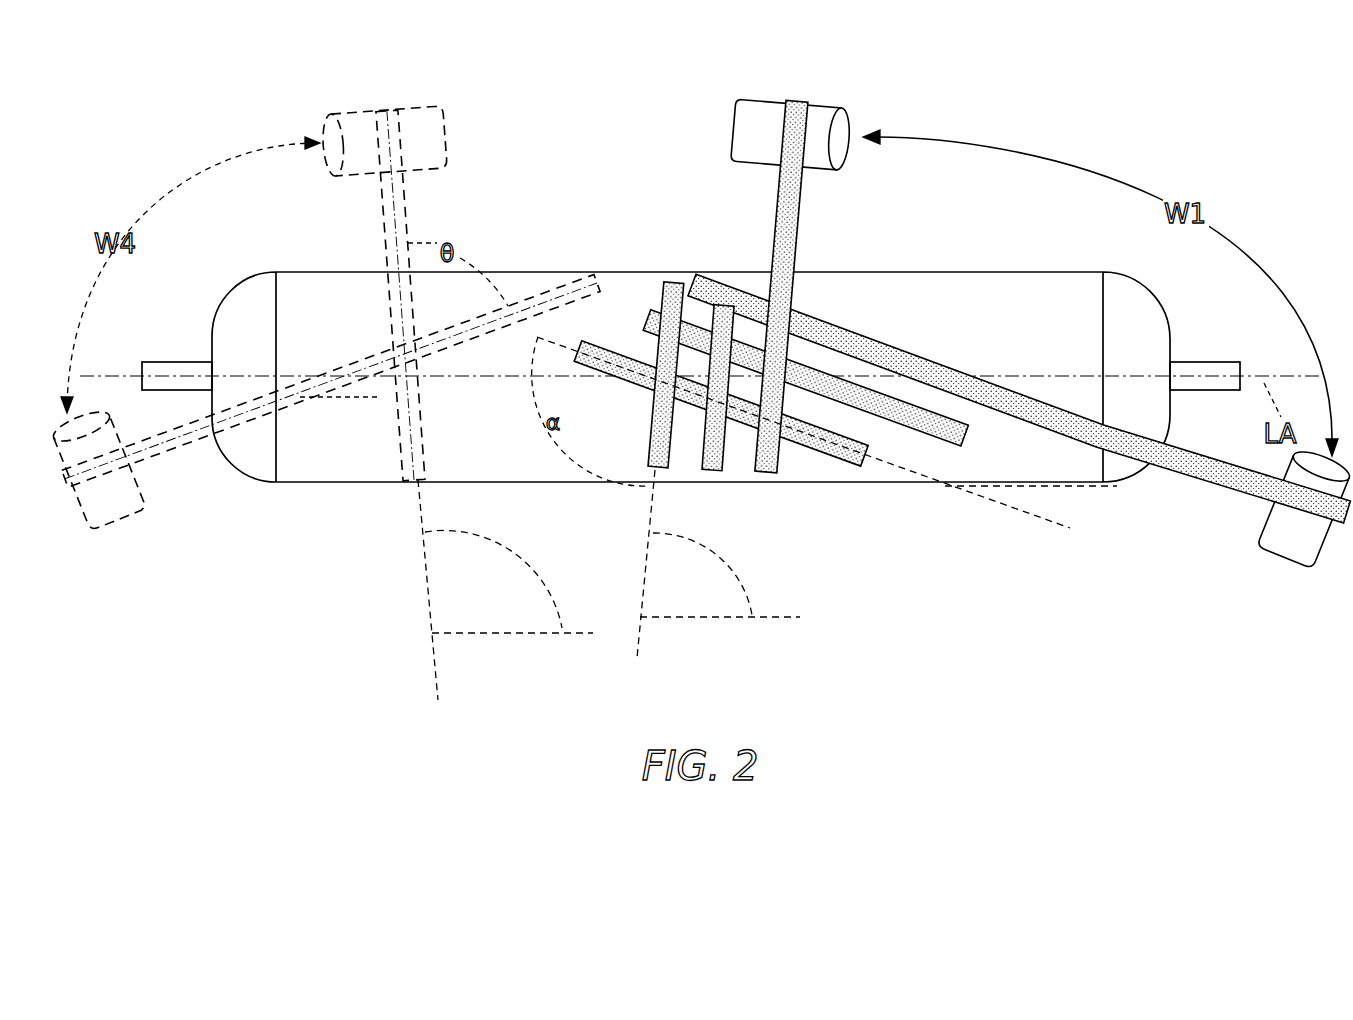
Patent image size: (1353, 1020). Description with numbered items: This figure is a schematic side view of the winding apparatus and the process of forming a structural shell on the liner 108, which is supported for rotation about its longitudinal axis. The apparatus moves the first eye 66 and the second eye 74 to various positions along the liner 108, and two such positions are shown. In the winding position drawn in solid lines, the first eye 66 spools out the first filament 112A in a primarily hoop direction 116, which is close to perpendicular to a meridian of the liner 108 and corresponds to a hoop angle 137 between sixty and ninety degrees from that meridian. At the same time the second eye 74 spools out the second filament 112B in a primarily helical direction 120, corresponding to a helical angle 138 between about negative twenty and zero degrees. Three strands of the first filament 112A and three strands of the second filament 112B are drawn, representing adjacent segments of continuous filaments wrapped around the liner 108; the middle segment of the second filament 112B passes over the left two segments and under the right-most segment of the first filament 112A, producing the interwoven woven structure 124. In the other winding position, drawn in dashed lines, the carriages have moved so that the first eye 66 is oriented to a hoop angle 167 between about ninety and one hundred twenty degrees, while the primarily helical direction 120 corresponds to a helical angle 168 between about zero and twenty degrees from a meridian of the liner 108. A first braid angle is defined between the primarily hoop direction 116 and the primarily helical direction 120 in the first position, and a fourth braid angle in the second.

The first eye 66 is at (447, 123).
The second eye 74 is at (110, 530).
The liner 108 is at (617, 272).
The first filament 112A is at (375, 203).
The second filament 112B is at (175, 452).
The primarily hoop direction 116 is at (420, 522).
The primarily helical direction 120 is at (555, 290).
The woven structure 124 is at (802, 296).
The hoop angle 137 is at (715, 550).
The helical angle 138 is at (1078, 487).
The hoop angle 167 is at (507, 555).
The helical angle 168 is at (380, 397).